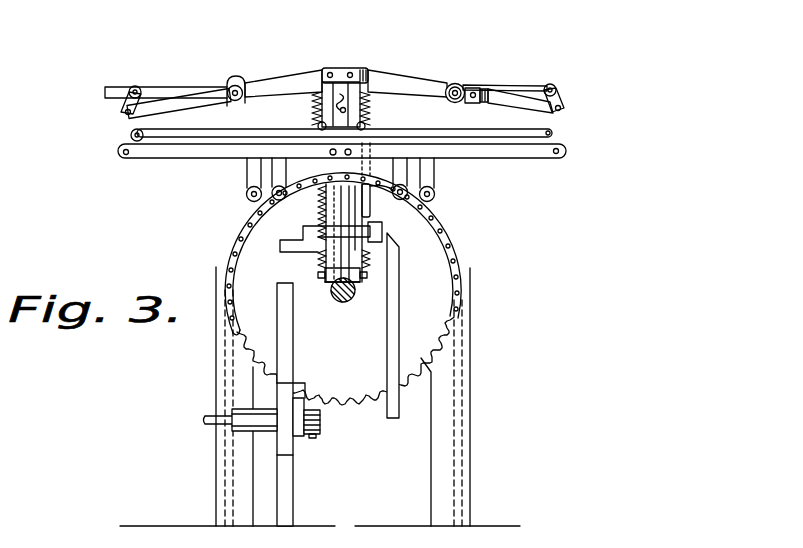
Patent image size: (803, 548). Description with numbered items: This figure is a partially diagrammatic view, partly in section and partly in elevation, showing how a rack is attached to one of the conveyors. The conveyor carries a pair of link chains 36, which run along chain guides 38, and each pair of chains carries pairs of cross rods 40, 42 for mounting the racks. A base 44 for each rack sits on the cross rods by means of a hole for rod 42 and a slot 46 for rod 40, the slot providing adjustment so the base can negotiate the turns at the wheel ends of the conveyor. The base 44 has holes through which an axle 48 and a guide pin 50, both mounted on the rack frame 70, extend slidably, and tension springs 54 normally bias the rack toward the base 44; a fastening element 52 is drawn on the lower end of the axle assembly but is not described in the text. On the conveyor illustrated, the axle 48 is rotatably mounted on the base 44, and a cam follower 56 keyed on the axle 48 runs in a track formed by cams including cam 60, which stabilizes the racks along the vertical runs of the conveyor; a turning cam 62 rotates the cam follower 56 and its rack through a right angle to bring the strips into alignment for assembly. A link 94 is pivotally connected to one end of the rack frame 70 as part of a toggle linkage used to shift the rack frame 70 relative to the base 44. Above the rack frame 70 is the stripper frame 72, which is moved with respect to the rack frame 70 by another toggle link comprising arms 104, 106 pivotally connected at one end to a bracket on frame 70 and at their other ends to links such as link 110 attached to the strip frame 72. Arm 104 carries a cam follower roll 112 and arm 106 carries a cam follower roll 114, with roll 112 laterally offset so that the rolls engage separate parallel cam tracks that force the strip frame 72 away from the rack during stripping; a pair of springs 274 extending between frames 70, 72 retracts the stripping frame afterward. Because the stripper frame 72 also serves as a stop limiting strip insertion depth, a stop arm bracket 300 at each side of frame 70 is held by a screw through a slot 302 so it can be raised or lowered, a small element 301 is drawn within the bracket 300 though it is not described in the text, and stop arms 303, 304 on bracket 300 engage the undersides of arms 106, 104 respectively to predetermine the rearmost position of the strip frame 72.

The link chains 36 is at (460, 253).
The chain guides 38 is at (469, 408).
The cross rod 40 is at (246, 186).
The cross rod 42 is at (436, 192).
The base 44 is at (397, 168).
The slot 46 is at (320, 206).
The axle 48 is at (337, 272).
The guide pin 50 is at (370, 220).
The lower nut 52 is at (363, 258).
The tension springs 54 is at (327, 254).
The cam follower 56 is at (282, 247).
The cam 60 is at (392, 327).
The turning cam 62 is at (385, 241).
The rack frame 70 is at (470, 104).
The stripper frame 72 is at (160, 93).
The link 94 is at (128, 145).
The arm 104 is at (445, 83).
The arm 106 is at (280, 80).
The link 110 is at (125, 95).
The cam follower roll 112 is at (486, 86).
The cam follower roll 114 is at (246, 77).
The springs 274 is at (310, 101).
The stop arm bracket 300 is at (331, 95).
The latch element 301 is at (358, 90).
The slot 302 is at (373, 105).
The stop arm 303 is at (315, 72).
The stop arm 304 is at (367, 82).